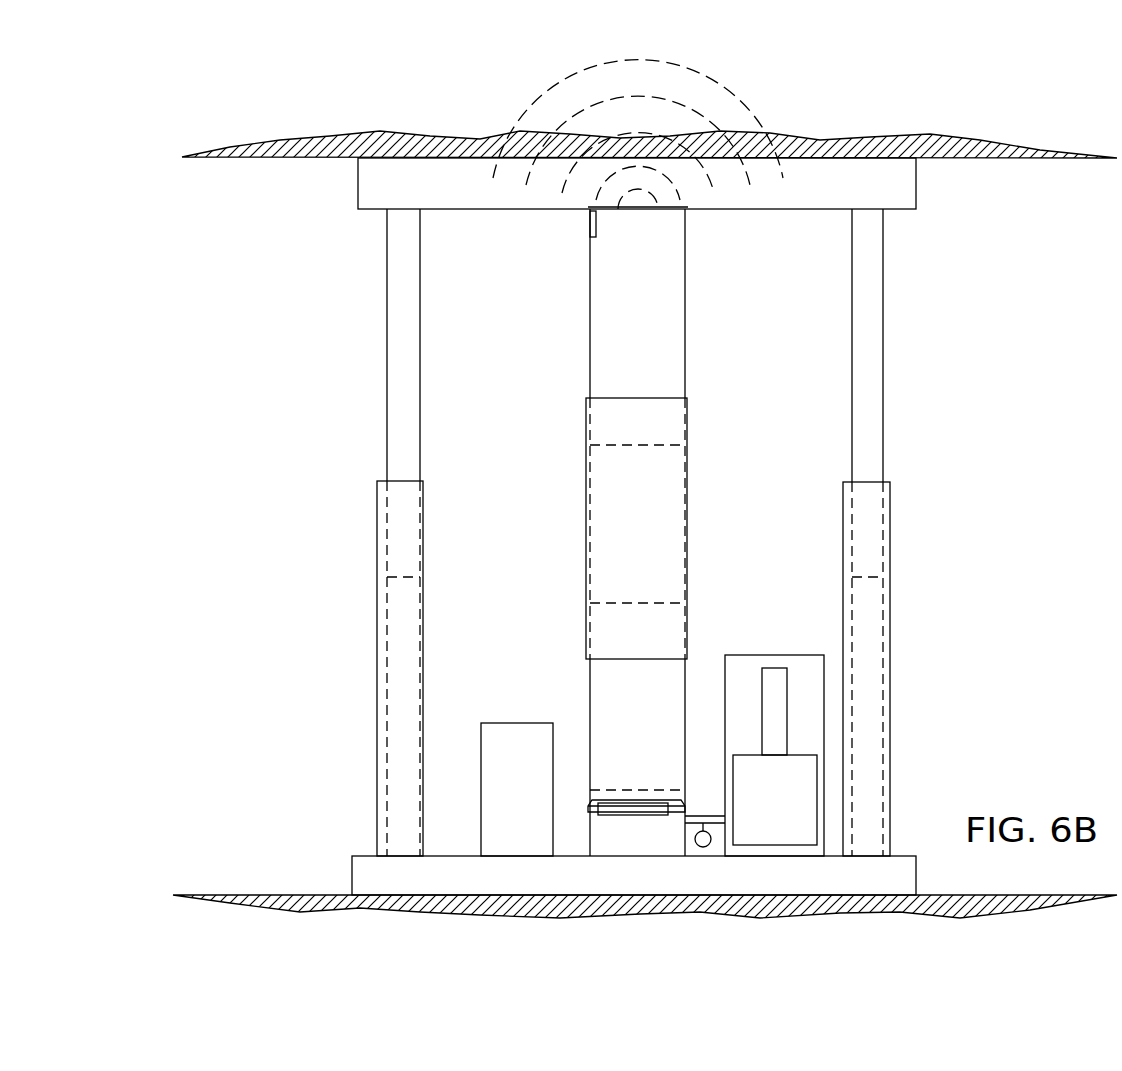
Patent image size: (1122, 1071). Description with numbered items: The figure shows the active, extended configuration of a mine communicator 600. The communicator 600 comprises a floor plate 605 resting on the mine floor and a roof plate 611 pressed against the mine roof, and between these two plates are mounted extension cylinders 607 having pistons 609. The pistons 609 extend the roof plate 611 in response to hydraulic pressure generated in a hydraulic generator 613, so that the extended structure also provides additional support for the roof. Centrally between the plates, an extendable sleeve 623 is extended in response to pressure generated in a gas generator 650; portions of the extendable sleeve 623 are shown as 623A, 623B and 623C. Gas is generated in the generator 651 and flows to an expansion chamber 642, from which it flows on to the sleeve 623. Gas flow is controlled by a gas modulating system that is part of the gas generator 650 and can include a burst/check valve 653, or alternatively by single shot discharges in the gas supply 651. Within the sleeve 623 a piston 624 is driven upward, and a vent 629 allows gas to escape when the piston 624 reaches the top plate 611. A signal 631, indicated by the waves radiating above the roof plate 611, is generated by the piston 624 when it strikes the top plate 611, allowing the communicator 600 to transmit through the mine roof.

The communicator 600 is at (193, 286).
The floor plate 605 is at (352, 877).
The extension cylinders 607 is at (377, 553).
The pistons 609 is at (387, 363).
The roof plate 611 is at (916, 183).
The hydraulic generator 613 is at (481, 786).
The sleeve 623 is at (591, 531).
The sleeve portion 623A is at (590, 350).
The sleeve portion 623B is at (590, 472).
The sleeve portion 623C is at (590, 696).
The piston 624 is at (625, 798).
The vent 629 is at (588, 234).
The signal 631 is at (768, 133).
The expansion chamber 642 is at (773, 840).
The gas generator 650 is at (815, 715).
The generator 651 is at (775, 668).
The burst/check valve 653 is at (703, 847).